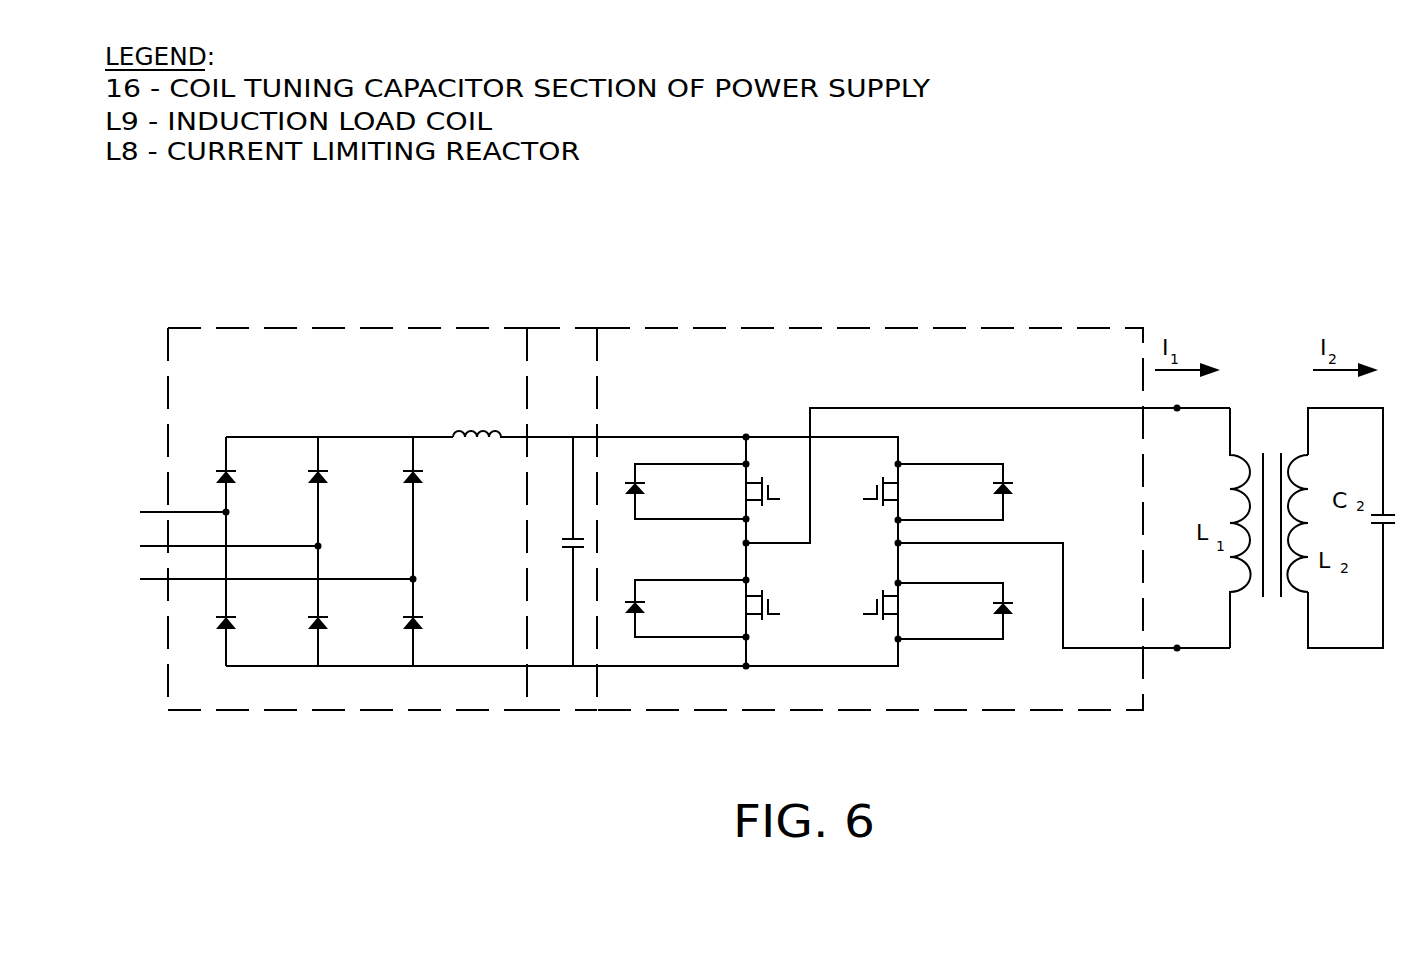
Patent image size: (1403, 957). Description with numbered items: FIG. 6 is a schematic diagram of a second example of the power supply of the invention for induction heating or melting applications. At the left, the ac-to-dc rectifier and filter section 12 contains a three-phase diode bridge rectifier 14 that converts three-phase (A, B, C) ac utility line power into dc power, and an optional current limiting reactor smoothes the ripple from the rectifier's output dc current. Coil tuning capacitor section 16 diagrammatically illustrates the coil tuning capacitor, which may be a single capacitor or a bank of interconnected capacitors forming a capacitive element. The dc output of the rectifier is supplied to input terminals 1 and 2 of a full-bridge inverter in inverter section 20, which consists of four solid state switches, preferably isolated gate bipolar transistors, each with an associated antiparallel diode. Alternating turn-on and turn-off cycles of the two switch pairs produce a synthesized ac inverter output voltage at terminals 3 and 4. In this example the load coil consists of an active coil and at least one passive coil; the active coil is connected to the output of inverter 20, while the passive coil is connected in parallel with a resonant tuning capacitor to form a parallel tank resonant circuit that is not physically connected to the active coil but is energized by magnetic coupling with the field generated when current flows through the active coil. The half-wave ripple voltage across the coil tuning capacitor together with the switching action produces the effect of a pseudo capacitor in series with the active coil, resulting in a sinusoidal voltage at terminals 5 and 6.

The ac-to-dc rectifier and filter section 12 is at (337, 328).
The three-phase diode bridge rectifier 14 is at (211, 420).
The coil tuning capacitor section 16 is at (543, 332).
The inverter section 20 is at (912, 328).
The input terminal 1 is at (747, 420).
The input terminal 2 is at (749, 683).
The inverter output terminal 3 is at (987, 492).
The inverter output terminal 4 is at (1049, 594).
The active coil terminal 5 is at (1177, 424).
The active coil terminal 6 is at (1177, 665).